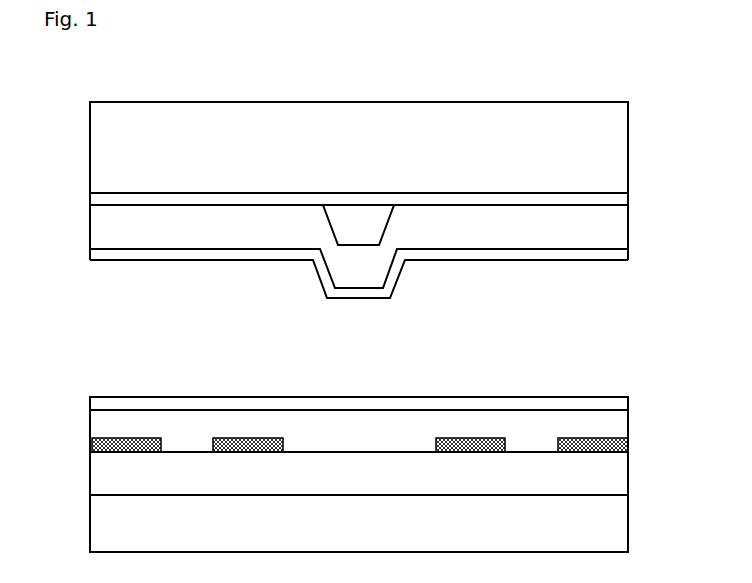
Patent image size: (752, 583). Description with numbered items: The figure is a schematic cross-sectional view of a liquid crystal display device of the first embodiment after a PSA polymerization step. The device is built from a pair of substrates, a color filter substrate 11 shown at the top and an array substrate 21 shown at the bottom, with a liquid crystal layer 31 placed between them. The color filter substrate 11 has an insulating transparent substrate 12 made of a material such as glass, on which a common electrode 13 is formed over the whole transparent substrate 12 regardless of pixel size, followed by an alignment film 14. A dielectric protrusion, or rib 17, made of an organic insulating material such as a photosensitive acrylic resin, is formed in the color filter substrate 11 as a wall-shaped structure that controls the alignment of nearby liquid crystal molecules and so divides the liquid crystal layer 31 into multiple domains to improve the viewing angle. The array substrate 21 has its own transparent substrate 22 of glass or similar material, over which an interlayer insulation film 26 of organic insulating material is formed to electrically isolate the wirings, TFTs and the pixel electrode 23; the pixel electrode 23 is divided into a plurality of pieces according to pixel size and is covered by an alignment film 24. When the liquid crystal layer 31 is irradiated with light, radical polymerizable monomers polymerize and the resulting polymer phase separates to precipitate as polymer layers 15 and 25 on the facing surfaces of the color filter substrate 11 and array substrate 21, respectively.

The color filter substrate 11 is at (83, 102).
The transparent substrate 12 is at (614, 150).
The common electrode 13 is at (614, 199).
The alignment film 14 is at (614, 229).
The polymer layer 15 is at (614, 256).
The dielectric protrusion 17 is at (352, 222).
The liquid crystal layer 31 is at (83, 260).
The array substrate 21 is at (83, 397).
The transparent substrate 22 is at (614, 523).
The pixel electrode 23 is at (614, 446).
The alignment film 24 is at (614, 424).
The polymer layer 25 is at (614, 404).
The interlayer insulation film 26 is at (614, 474).